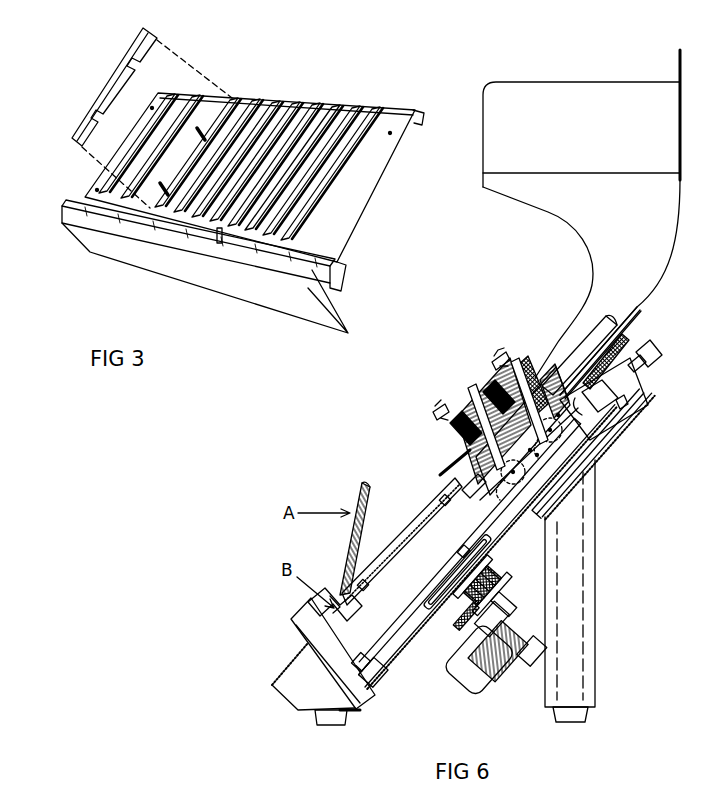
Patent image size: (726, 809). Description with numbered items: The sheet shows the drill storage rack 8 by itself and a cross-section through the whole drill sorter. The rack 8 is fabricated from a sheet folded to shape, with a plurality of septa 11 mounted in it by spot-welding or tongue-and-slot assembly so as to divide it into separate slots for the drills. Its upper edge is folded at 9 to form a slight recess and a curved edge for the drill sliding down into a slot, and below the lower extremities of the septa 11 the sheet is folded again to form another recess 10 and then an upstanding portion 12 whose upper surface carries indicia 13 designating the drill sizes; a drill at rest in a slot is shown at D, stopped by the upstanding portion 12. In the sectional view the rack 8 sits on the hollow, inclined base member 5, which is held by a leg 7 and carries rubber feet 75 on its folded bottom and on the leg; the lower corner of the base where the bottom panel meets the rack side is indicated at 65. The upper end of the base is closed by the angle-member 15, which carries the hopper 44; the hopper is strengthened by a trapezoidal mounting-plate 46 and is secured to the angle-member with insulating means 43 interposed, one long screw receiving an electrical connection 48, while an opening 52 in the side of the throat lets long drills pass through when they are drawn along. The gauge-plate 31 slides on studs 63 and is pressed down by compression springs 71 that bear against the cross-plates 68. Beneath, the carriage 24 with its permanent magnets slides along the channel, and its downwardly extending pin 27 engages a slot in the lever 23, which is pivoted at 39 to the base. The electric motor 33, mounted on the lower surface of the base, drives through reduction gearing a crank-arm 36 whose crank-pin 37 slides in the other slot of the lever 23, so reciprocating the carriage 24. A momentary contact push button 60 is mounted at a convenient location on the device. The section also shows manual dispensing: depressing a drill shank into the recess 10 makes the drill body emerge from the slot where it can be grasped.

In FIG. 6, the base member 5 is at (272, 685).
In FIG. 6, the leg 7 is at (596, 520).
In FIG. 3, the drill storage rack 8 is at (372, 191).
In FIG. 6, the drill storage rack 8 is at (300, 634).
In FIG. 3, the folded upper edge 9 is at (410, 109).
In FIG. 6, the folded upper edge 9 is at (468, 481).
In FIG. 3, the recess 10 is at (341, 283).
In FIG. 6, the recess 10 is at (358, 617).
In FIG. 3, the septa 11 is at (232, 98).
In FIG. 6, the septa 11 is at (437, 490).
In FIG. 3, the upstanding portion 12 is at (307, 279).
In FIG. 3, the indicia 13 is at (80, 213).
In FIG. 6, the angle-member 15 is at (646, 394).
In FIG. 6, the lever 23 is at (471, 584).
In FIG. 6, the carriage 24 is at (504, 516).
In FIG. 6, the pin 27 is at (590, 453).
In FIG. 6, the gauge-plate 31 is at (537, 378).
In FIG. 6, the electric motor 33 is at (489, 633).
In FIG. 6, the crank-arm 36 is at (491, 547).
In FIG. 6, the crank-pin 37 is at (463, 551).
In FIG. 6, the pivot 39 is at (368, 668).
In FIG. 6, the insulating means 43 is at (621, 343).
In FIG. 6, the hopper 44 is at (548, 212).
In FIG. 6, the mounting-plate 46 is at (645, 306).
In FIG. 6, the electrical connection 48 is at (598, 456).
In FIG. 6, the opening 52 is at (607, 323).
In FIG. 6, the momentary contact switch 60 is at (656, 362).
In FIG. 6, the studs 63 is at (432, 406).
In FIG. 6, the base foot 65 is at (357, 712).
In FIG. 6, the cross-plates 68 is at (505, 357).
In FIG. 6, the compression springs 71 is at (518, 365).
In FIG. 6, the rubber feet 75 is at (584, 723).
In FIG. 3, the drill at rest D is at (226, 244).